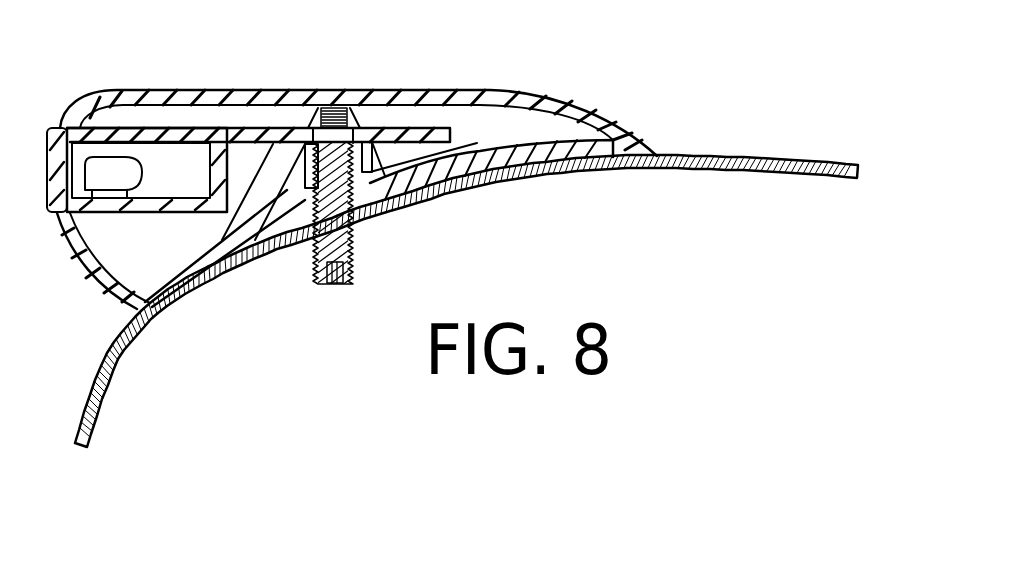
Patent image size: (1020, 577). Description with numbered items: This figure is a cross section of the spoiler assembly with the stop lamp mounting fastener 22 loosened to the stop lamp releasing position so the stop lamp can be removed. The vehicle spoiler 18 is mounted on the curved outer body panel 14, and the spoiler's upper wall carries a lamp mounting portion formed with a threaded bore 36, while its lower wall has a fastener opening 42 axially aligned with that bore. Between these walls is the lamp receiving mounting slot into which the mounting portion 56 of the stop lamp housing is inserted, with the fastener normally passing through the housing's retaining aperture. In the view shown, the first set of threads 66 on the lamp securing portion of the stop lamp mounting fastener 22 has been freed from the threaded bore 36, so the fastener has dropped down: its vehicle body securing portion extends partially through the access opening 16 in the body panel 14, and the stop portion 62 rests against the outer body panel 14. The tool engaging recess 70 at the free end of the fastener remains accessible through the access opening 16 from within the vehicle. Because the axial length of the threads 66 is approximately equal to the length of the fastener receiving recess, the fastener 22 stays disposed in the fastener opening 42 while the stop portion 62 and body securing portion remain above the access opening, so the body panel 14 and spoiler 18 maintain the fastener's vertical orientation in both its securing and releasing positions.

The outer body panel 14 is at (700, 162).
The access opening 16 is at (312, 252).
The vehicle spoiler 18 is at (525, 95).
The stop lamp mounting fastener 22 is at (352, 250).
The threaded bore 36 is at (338, 110).
The fastener opening 42 is at (270, 148).
The mounting portion 56 is at (413, 137).
The stop portion 62 is at (296, 170).
The first set of threads 66 is at (396, 197).
The tool engaging recess 70 is at (333, 287).